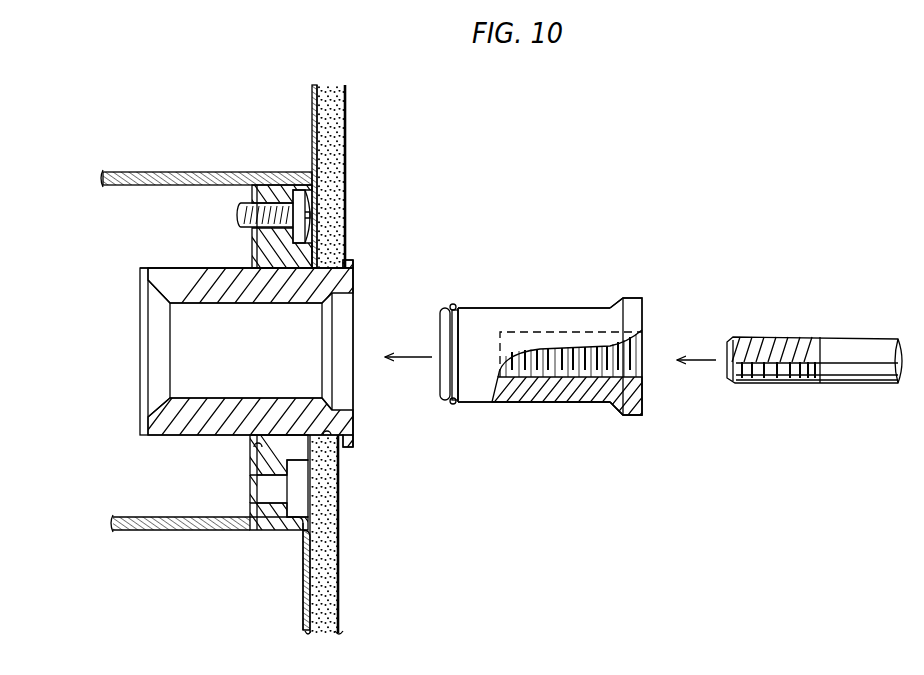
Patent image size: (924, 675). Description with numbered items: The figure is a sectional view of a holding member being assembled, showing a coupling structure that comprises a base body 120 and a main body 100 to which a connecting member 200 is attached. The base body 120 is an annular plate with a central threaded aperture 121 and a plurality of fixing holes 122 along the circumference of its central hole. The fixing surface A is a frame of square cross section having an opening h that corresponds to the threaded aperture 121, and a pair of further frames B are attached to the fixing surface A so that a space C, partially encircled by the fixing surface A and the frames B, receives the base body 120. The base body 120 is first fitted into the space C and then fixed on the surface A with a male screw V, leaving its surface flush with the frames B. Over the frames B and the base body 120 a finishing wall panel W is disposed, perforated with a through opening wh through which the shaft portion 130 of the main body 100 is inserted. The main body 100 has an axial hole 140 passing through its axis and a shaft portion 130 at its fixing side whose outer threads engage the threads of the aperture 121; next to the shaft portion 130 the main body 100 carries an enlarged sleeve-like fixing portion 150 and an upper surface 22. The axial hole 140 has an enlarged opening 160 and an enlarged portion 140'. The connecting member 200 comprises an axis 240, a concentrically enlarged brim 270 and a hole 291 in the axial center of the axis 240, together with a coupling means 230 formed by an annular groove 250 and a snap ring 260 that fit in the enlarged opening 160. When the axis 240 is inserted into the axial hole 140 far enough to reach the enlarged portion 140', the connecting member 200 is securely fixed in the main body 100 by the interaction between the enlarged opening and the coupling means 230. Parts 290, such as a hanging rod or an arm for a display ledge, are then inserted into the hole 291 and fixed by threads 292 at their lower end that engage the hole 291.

The main body 100 is at (118, 385).
The upper wall surface 22 is at (217, 270).
The base body 120 is at (312, 243).
The threaded aperture 121 is at (278, 420).
The fixing holes 122 is at (303, 497).
The shaft portion 130 is at (167, 280).
The axial hole 140 is at (246, 350).
The enlarged portion 140' is at (372, 342).
The fixing portion 150 is at (353, 268).
The enlarged opening 160 is at (170, 303).
The connecting member 200 is at (587, 226).
The coupling means 230 is at (467, 288).
The axis 240 is at (595, 408).
The annular groove 250 is at (461, 367).
The snap ring 260 is at (438, 377).
The enlarged brim 270 is at (635, 298).
The parts 290 is at (845, 322).
The hole 291 is at (555, 368).
The threads 292 is at (767, 385).
The fixing surface A is at (223, 475).
The frames B is at (312, 103).
The space C is at (270, 185).
The male screw V is at (302, 198).
The wall panel W is at (337, 582).
The opening h is at (247, 450).
The through opening wh is at (347, 440).